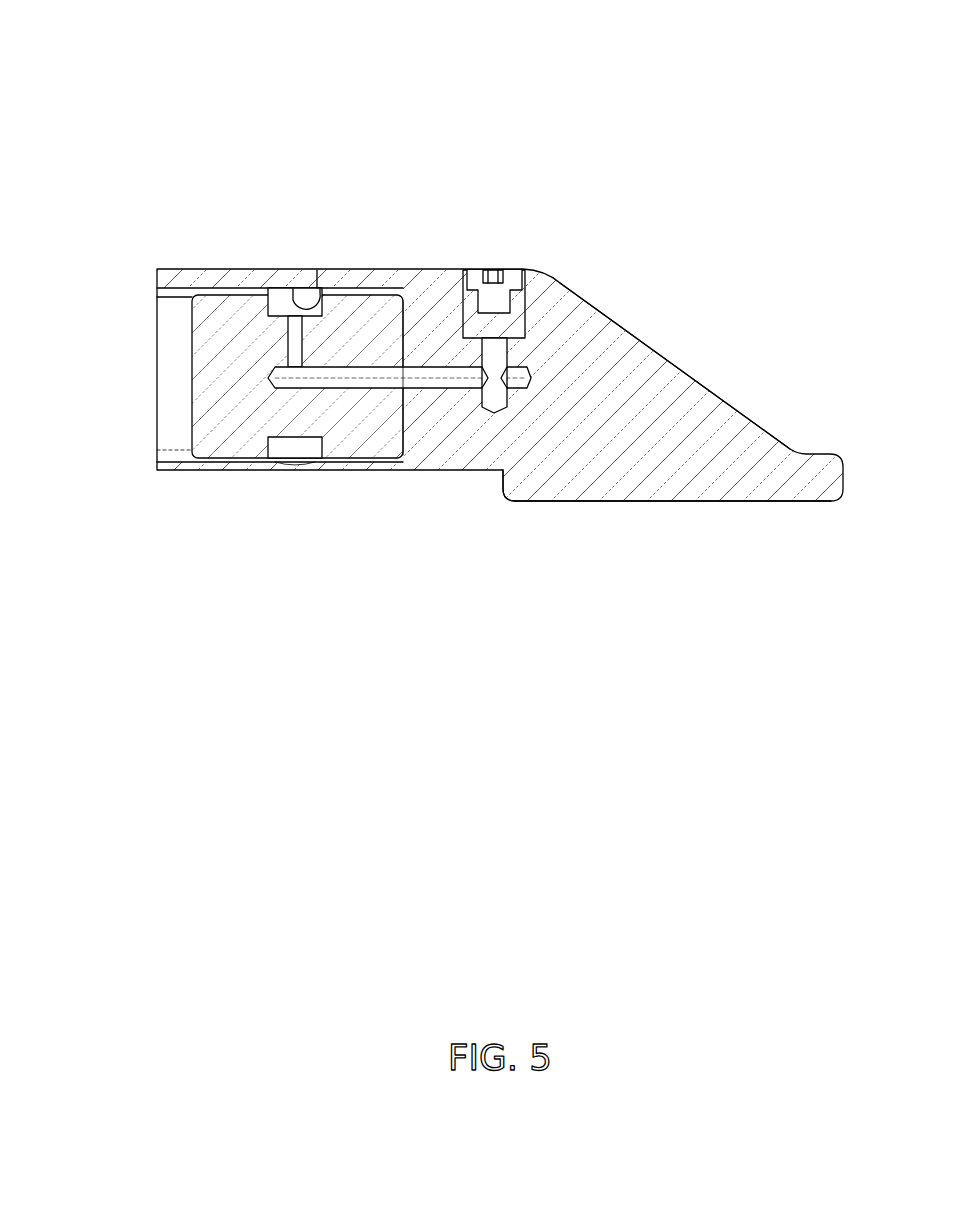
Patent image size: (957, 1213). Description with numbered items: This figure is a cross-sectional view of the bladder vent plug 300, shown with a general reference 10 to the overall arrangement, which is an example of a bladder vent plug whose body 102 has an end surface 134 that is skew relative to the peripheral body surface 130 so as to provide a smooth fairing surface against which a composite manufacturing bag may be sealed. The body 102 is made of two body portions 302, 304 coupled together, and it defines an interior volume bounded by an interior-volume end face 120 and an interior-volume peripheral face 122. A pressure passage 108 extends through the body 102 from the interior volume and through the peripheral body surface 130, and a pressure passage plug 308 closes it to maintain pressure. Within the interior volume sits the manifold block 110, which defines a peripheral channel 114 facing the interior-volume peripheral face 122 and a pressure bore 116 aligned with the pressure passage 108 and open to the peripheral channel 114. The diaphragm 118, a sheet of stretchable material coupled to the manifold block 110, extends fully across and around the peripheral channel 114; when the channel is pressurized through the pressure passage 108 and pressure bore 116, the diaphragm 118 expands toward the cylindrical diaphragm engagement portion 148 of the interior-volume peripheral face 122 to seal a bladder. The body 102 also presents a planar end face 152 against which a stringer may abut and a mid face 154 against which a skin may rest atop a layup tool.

The assembly 10 is at (780, 72).
The bladder vent plug 300 is at (757, 132).
The body 102 is at (700, 284).
The pressure passage 108 is at (520, 332).
The manifold block 110 is at (215, 290).
The peripheral channel 114 is at (283, 290).
The pressure bore 116 is at (300, 347).
The diaphragm 118 is at (295, 458).
The interior-volume end face 120 is at (402, 438).
The interior-volume peripheral face 122 is at (175, 290).
The peripheral body surface 130 is at (432, 270).
The end surface 134 is at (677, 362).
The diaphragm engagement portion 148 is at (333, 288).
The end face 152 is at (157, 278).
The mid face 154 is at (502, 478).
The body portion 302 is at (175, 471).
The body portion 304 is at (588, 503).
The pressure passage plug 308 is at (517, 270).